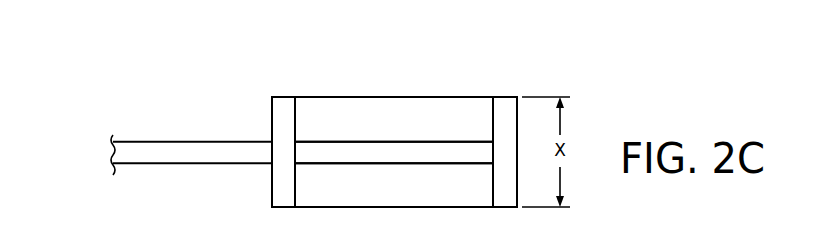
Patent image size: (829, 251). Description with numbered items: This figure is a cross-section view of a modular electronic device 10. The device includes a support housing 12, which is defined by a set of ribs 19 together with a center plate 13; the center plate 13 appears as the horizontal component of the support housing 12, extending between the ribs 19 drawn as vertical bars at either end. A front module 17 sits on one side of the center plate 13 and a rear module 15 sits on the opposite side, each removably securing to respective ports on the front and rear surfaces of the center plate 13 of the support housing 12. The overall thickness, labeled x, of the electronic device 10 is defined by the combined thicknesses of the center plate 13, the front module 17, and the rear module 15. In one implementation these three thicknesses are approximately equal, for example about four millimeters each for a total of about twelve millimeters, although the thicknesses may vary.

The electronic device 10 is at (257, 47).
The support housing 12 is at (188, 118).
The center plate 13 is at (357, 161).
The rear module 15 is at (396, 198).
The front module 17 is at (397, 105).
The ribs 19 is at (283, 104).